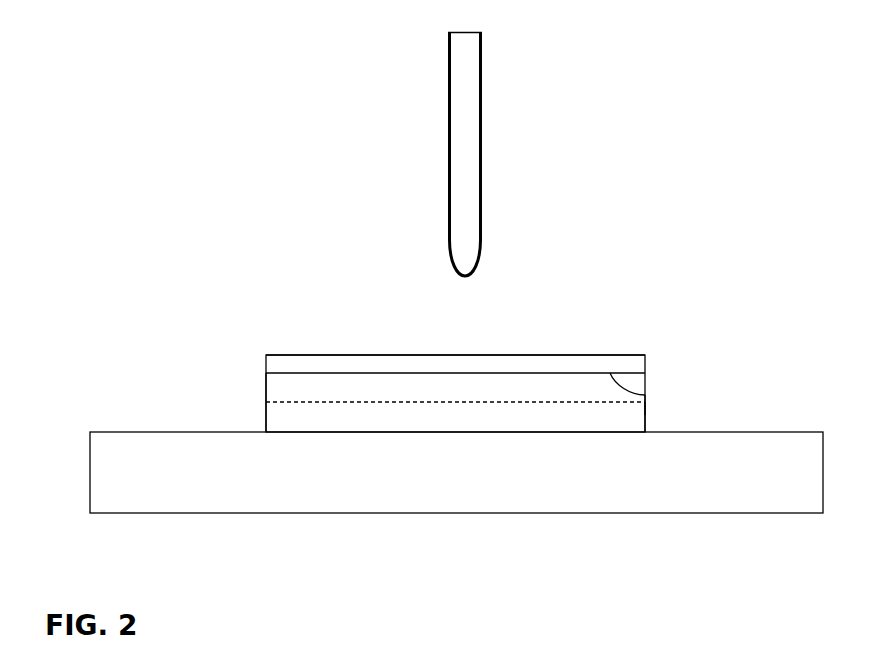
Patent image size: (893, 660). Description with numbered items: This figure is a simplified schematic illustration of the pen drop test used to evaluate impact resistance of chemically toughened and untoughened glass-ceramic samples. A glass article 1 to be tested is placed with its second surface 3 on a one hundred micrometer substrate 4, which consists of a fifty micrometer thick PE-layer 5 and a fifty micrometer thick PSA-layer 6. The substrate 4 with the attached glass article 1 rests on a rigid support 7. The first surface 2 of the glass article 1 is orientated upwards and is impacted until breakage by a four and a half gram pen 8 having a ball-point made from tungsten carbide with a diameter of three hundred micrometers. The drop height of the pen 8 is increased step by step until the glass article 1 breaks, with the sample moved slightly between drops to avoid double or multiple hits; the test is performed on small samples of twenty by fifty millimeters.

The glass-ceramic article 1 is at (280, 353).
The first outer surface 2 is at (590, 355).
The second outer surface 3 is at (645, 395).
The substrate 4 is at (657, 406).
The PE-layer 5 is at (266, 413).
The PSA-layer 6 is at (266, 383).
The rigid support 7 is at (153, 432).
The pen 8 is at (448, 123).